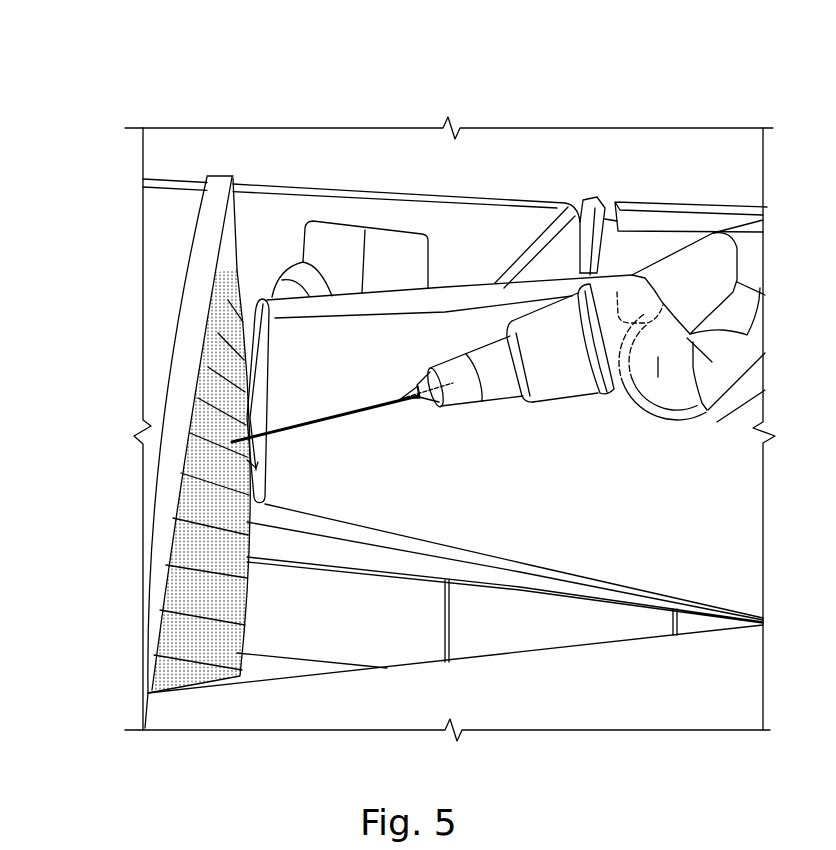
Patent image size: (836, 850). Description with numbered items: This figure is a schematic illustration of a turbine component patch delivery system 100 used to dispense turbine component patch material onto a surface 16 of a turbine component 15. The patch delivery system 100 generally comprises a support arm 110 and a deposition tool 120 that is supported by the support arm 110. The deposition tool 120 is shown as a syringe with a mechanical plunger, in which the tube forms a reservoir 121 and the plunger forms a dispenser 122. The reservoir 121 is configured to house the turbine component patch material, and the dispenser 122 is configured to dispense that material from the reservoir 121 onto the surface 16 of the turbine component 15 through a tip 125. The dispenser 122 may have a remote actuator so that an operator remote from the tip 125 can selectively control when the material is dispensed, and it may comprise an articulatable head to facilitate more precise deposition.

The turbine component patch delivery system 100 is at (130, 91).
The turbine component 15 is at (181, 290).
The surface 16 is at (257, 501).
The support arm 110 is at (682, 414).
The deposition tool 120 is at (542, 274).
The reservoir 121 is at (640, 390).
The dispenser 122 is at (627, 290).
The tip 125 is at (248, 418).